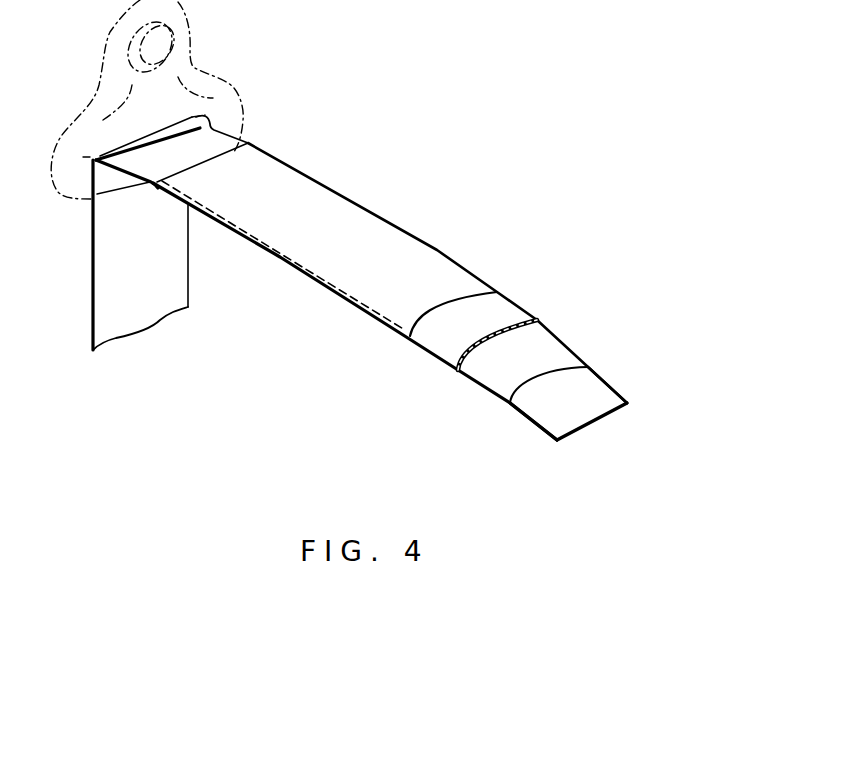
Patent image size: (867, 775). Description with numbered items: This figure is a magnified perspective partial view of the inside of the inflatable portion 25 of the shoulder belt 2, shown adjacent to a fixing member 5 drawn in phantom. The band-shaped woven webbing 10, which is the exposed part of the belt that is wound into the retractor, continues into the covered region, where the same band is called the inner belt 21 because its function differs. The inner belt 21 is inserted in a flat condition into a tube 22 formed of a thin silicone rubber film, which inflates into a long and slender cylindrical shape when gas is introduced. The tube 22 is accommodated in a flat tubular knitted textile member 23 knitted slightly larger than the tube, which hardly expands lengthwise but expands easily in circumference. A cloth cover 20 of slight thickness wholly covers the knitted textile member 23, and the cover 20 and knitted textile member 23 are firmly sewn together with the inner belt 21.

The shoulder belt 2 is at (421, 278).
The fixing member 5 is at (207, 68).
The webbing 10 is at (93, 275).
The cover 20 is at (438, 252).
The inner belt 21 is at (612, 390).
The tube 22 is at (575, 349).
The knitted textile member 23 is at (538, 319).
The inflatable portion 25 is at (364, 320).